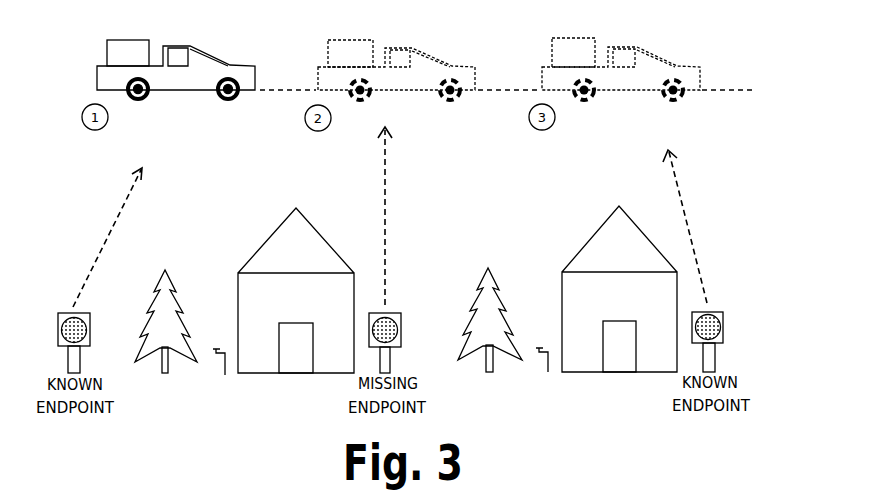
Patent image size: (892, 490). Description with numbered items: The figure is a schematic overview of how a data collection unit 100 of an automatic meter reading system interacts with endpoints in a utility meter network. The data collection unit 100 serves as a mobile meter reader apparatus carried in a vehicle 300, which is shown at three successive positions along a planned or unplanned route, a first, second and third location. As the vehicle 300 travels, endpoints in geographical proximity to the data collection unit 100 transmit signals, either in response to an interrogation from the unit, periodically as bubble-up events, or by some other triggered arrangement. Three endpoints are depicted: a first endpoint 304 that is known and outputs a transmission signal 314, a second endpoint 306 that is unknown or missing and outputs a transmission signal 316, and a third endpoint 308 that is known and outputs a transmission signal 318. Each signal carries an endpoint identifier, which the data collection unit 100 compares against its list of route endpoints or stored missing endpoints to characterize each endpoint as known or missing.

The data collection unit 100 is at (128, 40).
The vehicle 300 is at (195, 45).
The first endpoint 304 is at (93, 330).
The second endpoint 306 is at (401, 330).
The third endpoint 308 is at (723, 327).
The transmission signal 314 is at (112, 224).
The transmission signal 316 is at (386, 222).
The transmission signal 318 is at (688, 228).